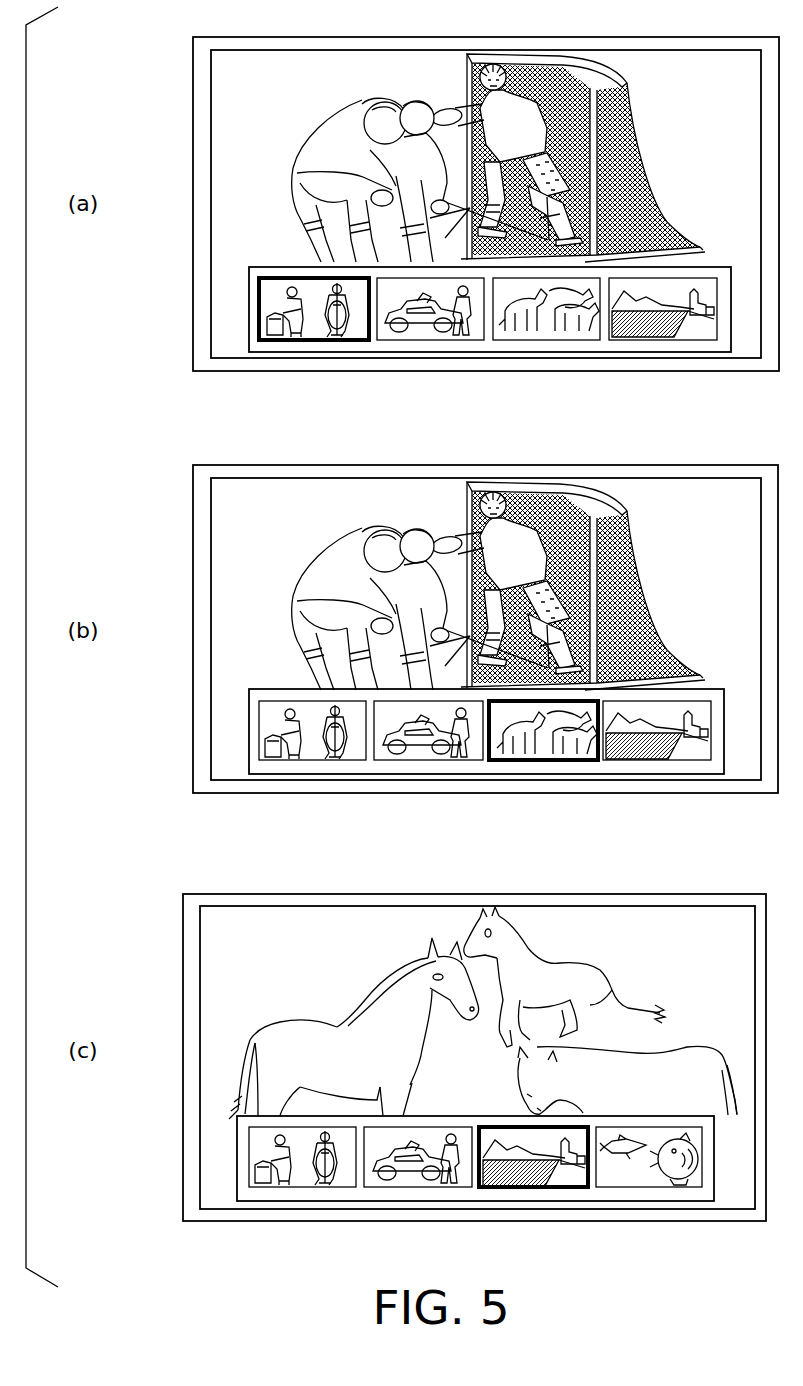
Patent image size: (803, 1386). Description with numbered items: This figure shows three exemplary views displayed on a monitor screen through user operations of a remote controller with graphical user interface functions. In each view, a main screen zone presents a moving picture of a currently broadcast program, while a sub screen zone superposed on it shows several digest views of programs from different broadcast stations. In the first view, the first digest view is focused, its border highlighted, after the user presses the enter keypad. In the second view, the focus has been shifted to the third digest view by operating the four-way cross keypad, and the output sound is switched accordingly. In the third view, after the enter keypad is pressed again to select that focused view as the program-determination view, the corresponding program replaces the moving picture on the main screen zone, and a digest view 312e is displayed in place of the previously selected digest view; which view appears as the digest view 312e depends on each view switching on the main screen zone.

The digest view 312e is at (695, 1184).